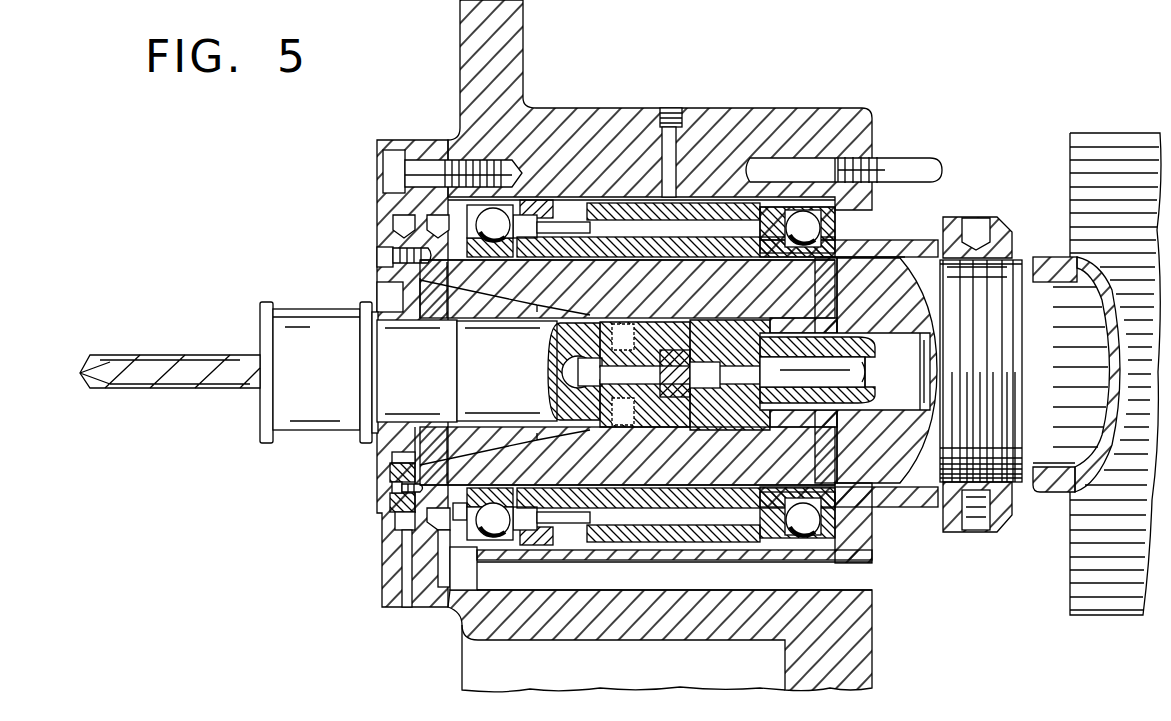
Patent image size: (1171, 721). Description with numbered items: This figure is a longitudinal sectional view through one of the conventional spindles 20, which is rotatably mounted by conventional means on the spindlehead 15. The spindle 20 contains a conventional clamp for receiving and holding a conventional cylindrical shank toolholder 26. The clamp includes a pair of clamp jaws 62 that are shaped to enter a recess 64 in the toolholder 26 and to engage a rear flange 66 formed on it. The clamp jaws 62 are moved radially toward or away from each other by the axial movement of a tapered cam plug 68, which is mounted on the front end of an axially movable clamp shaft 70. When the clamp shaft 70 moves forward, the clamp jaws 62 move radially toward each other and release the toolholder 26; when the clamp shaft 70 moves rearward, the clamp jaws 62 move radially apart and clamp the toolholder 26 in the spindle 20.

The spindlehead 15 is at (505, 55).
The spindle 20 is at (390, 484).
The toolholder 26 is at (307, 320).
The clamp jaws 62 is at (671, 333).
The recess 64 is at (556, 368).
The rear flange 66 is at (592, 387).
The tapered cam plug 68 is at (687, 310).
The clamp shaft 70 is at (867, 377).